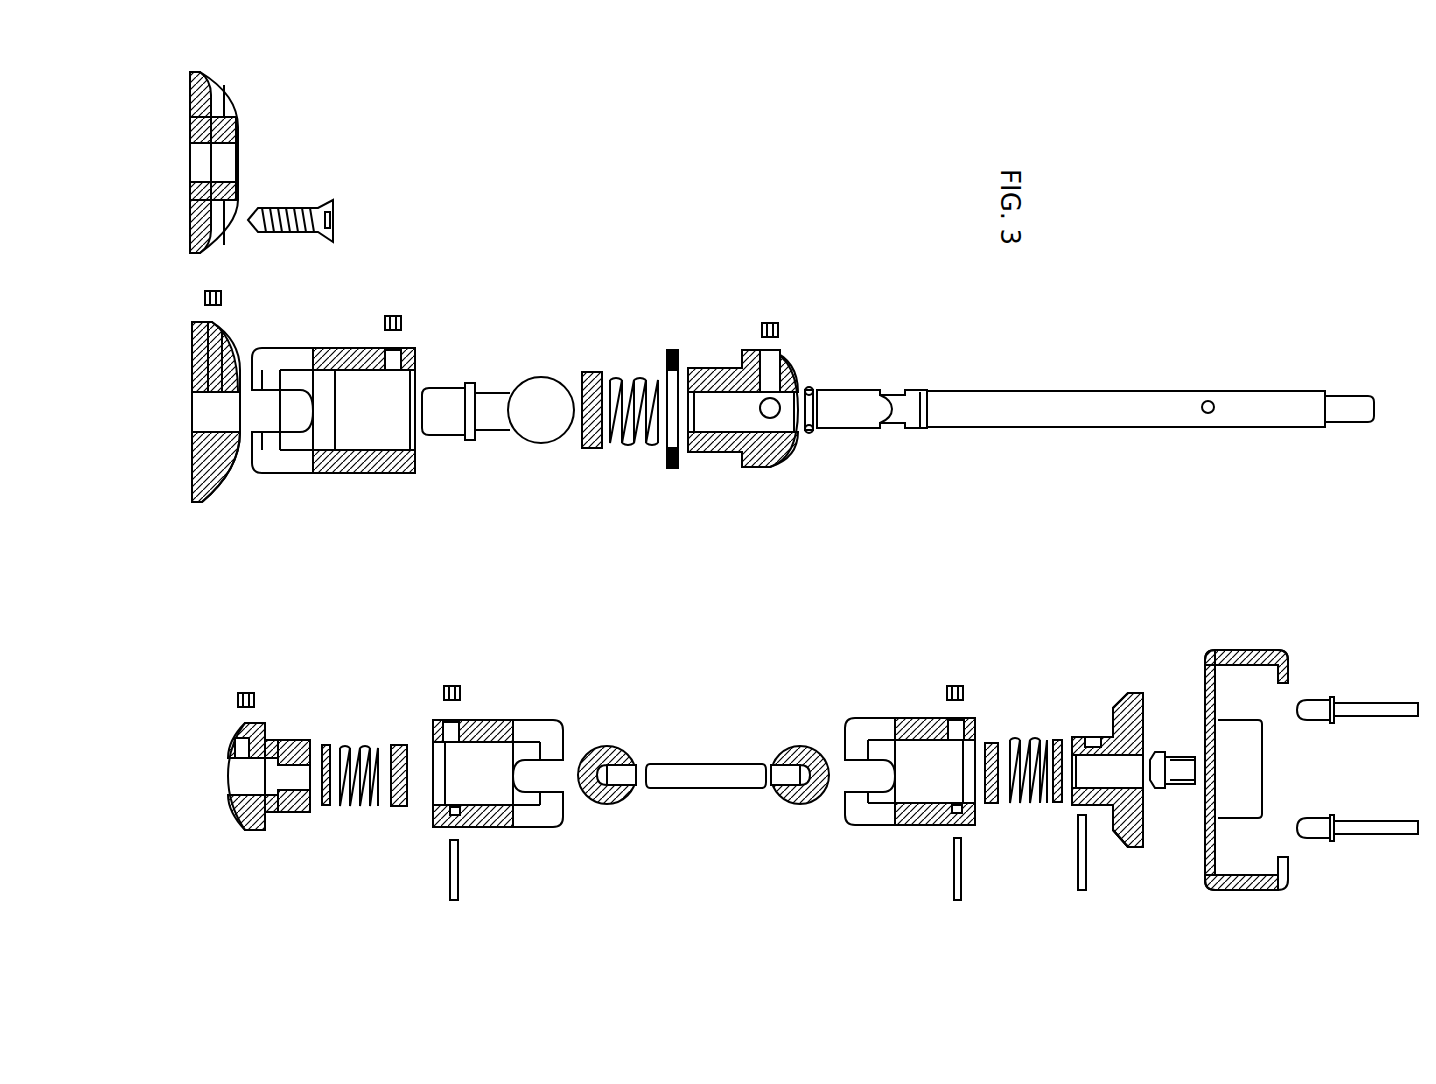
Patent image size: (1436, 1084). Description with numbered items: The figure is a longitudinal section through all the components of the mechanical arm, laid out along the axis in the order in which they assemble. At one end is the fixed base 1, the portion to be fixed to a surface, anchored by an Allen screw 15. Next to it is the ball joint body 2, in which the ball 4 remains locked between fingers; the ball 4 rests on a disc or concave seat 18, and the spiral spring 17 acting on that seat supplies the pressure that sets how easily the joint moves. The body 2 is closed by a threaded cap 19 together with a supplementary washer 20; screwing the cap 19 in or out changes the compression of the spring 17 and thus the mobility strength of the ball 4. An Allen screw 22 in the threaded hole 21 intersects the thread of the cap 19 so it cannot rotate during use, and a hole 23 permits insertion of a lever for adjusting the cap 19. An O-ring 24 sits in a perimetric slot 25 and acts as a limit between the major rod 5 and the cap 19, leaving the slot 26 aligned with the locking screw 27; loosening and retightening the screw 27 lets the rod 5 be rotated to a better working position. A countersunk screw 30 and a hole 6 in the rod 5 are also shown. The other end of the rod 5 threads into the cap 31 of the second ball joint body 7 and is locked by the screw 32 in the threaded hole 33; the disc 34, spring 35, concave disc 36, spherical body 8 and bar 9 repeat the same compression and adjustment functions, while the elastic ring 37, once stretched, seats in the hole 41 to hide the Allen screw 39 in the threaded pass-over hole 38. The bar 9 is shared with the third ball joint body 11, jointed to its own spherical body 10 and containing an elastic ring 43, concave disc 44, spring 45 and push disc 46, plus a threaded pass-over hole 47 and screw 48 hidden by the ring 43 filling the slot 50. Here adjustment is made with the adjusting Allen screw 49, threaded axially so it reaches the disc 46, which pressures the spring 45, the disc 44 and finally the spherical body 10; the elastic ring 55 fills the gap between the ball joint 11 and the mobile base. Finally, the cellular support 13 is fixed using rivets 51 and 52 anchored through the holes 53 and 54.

The fixed base 1 is at (195, 438).
The ball joint body 2 is at (302, 475).
The ball 4 is at (538, 415).
The major rod 5 is at (1115, 410).
The hole 6 is at (1202, 405).
The second ball joint body 7 is at (540, 828).
The spherical body 8 is at (592, 760).
The bar 9 is at (702, 773).
The spherical body 10 is at (830, 755).
The ball joint body 11 is at (875, 828).
The cellular support 13 is at (1275, 652).
The Allen screw 15 is at (222, 296).
The spiral spring 17 is at (630, 378).
The concave seat 18 is at (590, 375).
The cap 19 is at (762, 453).
The supplementary washer 20 is at (665, 467).
The threaded hole 21 is at (395, 360).
The Allen screw 22 is at (398, 312).
The hole 23 is at (775, 415).
The O-ring 24 is at (815, 392).
The perimetric slot 25 is at (922, 400).
The slot 26 is at (890, 420).
The locking screw 27 is at (780, 320).
The screw 30 is at (328, 200).
The cap 31 is at (252, 825).
The screw 32 is at (238, 694).
The threaded hole 33 is at (242, 745).
The disc 34 is at (323, 755).
The spring 35 is at (360, 750).
The concave disc 36 is at (395, 808).
The ring 37 is at (450, 880).
The threaded pass-over hole 38 is at (450, 735).
The Allen screw 39 is at (463, 688).
The hole 41 is at (455, 828).
The elastic ring 43 is at (955, 870).
The concave disc 44 is at (990, 745).
The spring 45 is at (1030, 805).
The push disc 46 is at (1055, 745).
The threaded pass-over hole 47 is at (955, 723).
The screw 48 is at (948, 686).
The adjusting Allen screw 49 is at (1158, 752).
The slot 50 is at (958, 826).
The rivet 51 is at (1380, 712).
The rivet 52 is at (1380, 835).
The hole 53 is at (1125, 708).
The hole 54 is at (1132, 833).
The ring 55 is at (1085, 868).